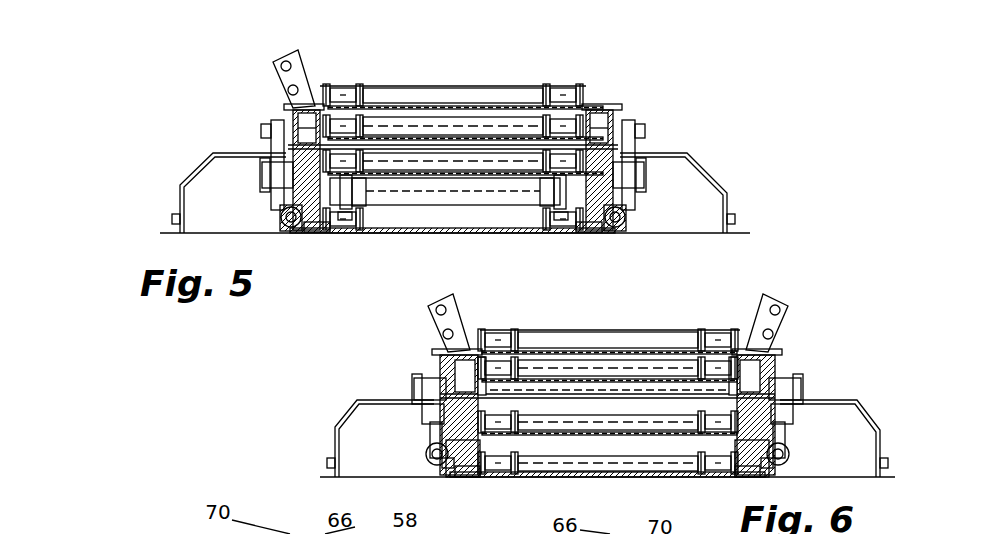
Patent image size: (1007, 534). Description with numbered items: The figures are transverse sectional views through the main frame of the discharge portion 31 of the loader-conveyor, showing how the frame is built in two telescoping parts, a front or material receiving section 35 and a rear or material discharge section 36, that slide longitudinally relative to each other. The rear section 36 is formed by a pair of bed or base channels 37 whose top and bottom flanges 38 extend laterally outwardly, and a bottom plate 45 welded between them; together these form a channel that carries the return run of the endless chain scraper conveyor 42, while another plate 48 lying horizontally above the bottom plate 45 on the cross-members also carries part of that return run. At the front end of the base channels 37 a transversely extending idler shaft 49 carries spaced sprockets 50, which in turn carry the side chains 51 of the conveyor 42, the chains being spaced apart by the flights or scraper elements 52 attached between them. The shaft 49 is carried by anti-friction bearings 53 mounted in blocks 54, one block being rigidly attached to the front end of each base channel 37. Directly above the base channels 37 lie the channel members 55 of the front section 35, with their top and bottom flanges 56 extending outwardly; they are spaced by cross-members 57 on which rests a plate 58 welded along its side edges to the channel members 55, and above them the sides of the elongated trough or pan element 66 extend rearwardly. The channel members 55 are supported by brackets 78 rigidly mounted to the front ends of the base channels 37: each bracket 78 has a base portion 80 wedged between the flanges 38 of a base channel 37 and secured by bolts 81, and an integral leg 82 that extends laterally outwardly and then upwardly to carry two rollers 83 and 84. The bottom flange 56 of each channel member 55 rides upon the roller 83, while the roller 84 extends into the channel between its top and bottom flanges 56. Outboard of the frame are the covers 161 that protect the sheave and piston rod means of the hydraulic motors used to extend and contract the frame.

In FIG. 5, the discharge portion 31 is at (250, 132).
In FIG. 6, the discharge portion 31 is at (420, 306).
In FIG. 5, the front or material receiving section 35 is at (280, 117).
In FIG. 6, the front or material receiving section 35 is at (440, 357).
In FIG. 5, the rear or material discharge section 36 is at (452, 236).
In FIG. 6, the rear or material discharge section 36 is at (692, 480).
In FIG. 6, the bed or base channels 37 is at (470, 479).
In FIG. 5, the top and bottom flanges 38 is at (276, 190).
In FIG. 6, the top and bottom flanges 38 is at (350, 410).
In FIG. 5, the endless chain scraper conveyor 42 is at (496, 72).
In FIG. 6, the endless chain scraper conveyor 42 is at (630, 318).
In FIG. 5, the bottom plate 45 is at (485, 235).
In FIG. 6, the bottom plate 45 is at (568, 479).
In FIG. 6, the plate 48 is at (612, 473).
In FIG. 5, the shaft 49 is at (445, 189).
In FIG. 5, the sprockets 50 is at (346, 222).
In FIG. 5, the side chains 51 is at (345, 92).
In FIG. 6, the side chains 51 is at (528, 365).
In FIG. 5, the flights or scraper elements 52 is at (485, 178).
In FIG. 6, the flights or scraper elements 52 is at (628, 468).
In FIG. 5, the anti-friction bearings 53 is at (264, 170).
In FIG. 5, the blocks 54 is at (318, 235).
In FIG. 5, the channel members 55 is at (600, 108).
In FIG. 6, the channel members 55 is at (482, 396).
In FIG. 5, the top and bottom flanges 56 is at (290, 108).
In FIG. 6, the top and bottom flanges 56 is at (447, 352).
In FIG. 5, the cross-members 57 is at (414, 138).
In FIG. 6, the cross-members 57 is at (600, 390).
In FIG. 5, the plate 58 is at (448, 133).
In FIG. 6, the plate 58 is at (574, 370).
In FIG. 5, the trough or pan element 66 is at (308, 62).
In FIG. 6, the trough or pan element 66 is at (762, 308).
In FIG. 5, the brackets 78 is at (282, 202).
In FIG. 6, the brackets 78 is at (442, 428).
In FIG. 6, the base portion 80 is at (428, 453).
In FIG. 6, the bolts 81 is at (440, 462).
In FIG. 6, the leg 82 is at (432, 390).
In FIG. 6, the roller 83 is at (440, 412).
In FIG. 6, the roller 84 is at (455, 372).
In FIG. 5, the covers 161 is at (200, 175).
In FIG. 6, the covers 161 is at (352, 410).